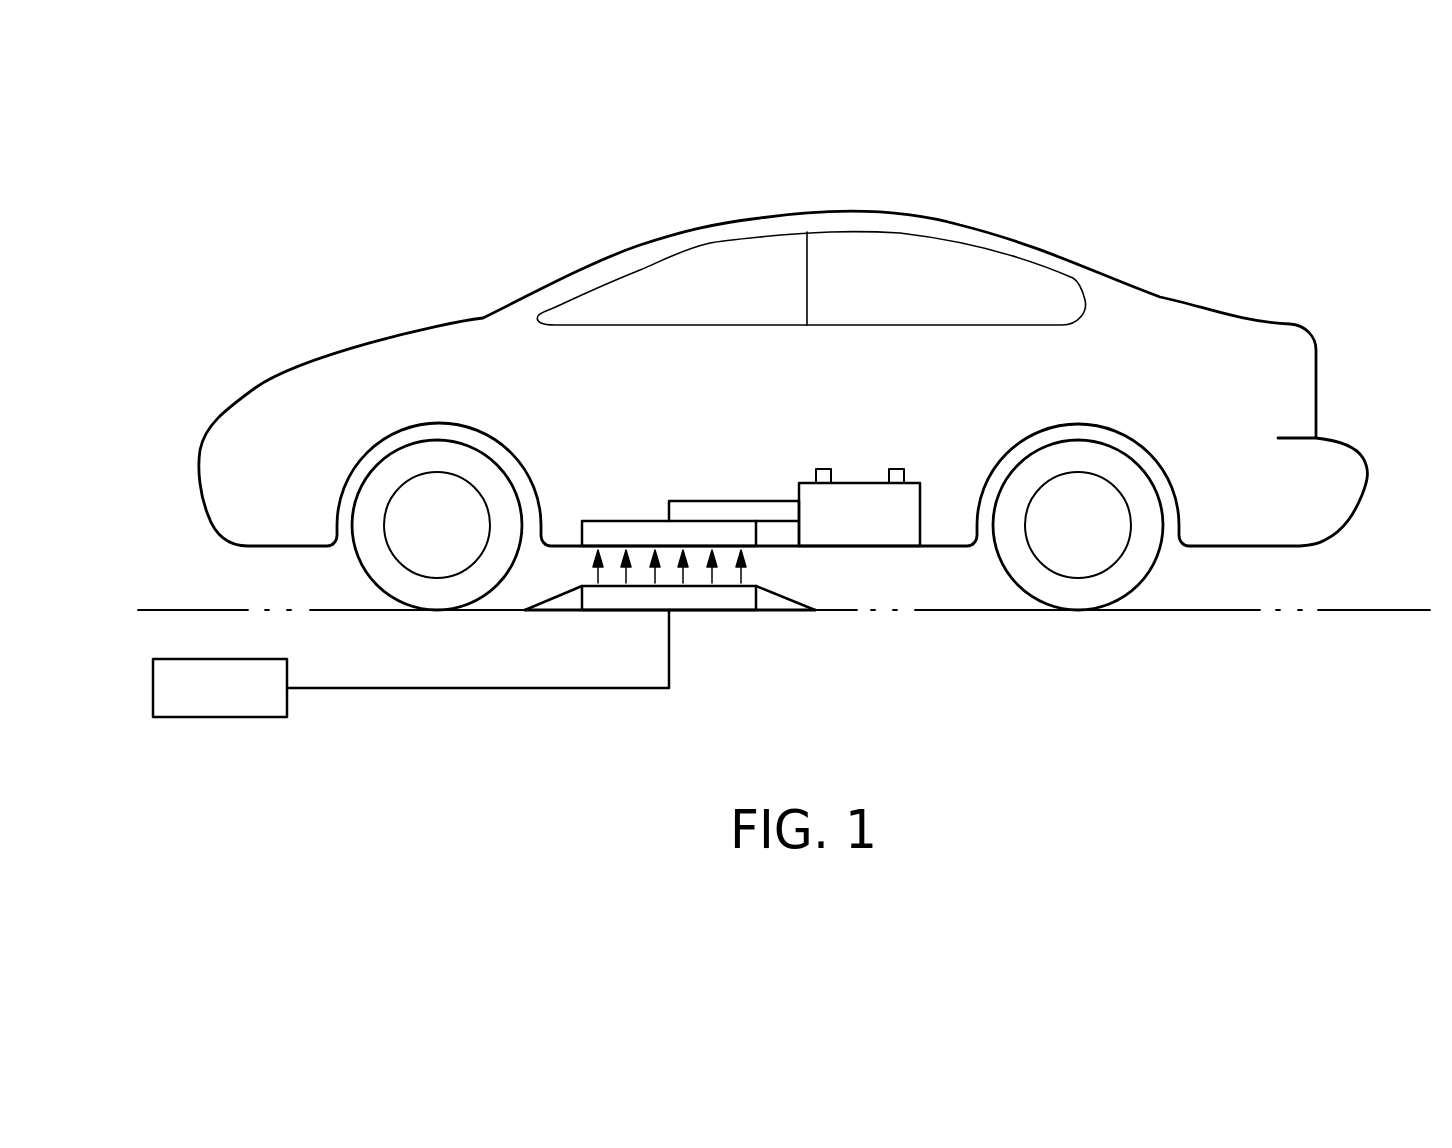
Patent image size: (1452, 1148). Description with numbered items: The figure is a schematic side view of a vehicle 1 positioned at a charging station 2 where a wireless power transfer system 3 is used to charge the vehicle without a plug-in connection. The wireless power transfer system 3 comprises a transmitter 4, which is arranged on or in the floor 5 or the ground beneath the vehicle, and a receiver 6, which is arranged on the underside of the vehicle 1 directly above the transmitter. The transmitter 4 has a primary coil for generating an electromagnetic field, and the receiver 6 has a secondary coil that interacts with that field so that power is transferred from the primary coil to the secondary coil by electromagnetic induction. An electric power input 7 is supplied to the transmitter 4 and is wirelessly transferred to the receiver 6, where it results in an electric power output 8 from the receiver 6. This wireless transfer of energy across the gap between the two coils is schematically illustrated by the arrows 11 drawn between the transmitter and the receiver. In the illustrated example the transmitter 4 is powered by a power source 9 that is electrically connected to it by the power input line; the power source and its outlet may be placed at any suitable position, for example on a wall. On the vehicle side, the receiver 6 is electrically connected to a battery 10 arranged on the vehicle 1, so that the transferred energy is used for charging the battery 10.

The vehicle 1 is at (837, 213).
The charging station 2 is at (333, 267).
The wireless power transfer system 3 is at (685, 672).
The transmitter 4 is at (707, 597).
The floor 5 is at (982, 610).
The receiver 6 is at (627, 535).
The electric power input 7 is at (480, 688).
The electric power output 8 is at (723, 499).
The power source 9 is at (222, 717).
The battery 10 is at (865, 513).
The arrows 11 is at (741, 575).